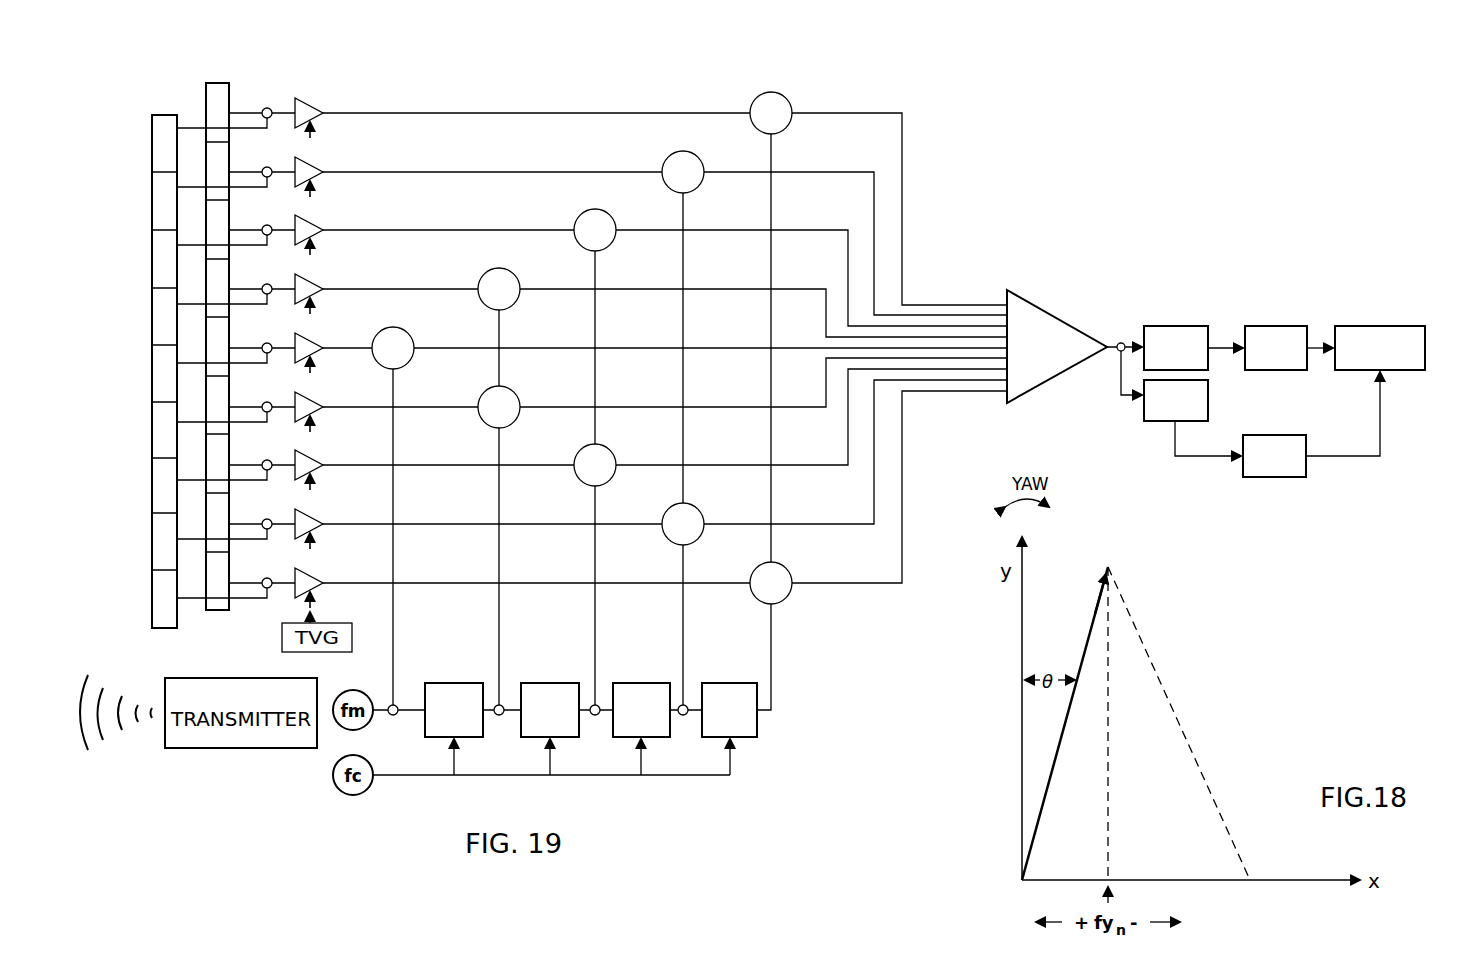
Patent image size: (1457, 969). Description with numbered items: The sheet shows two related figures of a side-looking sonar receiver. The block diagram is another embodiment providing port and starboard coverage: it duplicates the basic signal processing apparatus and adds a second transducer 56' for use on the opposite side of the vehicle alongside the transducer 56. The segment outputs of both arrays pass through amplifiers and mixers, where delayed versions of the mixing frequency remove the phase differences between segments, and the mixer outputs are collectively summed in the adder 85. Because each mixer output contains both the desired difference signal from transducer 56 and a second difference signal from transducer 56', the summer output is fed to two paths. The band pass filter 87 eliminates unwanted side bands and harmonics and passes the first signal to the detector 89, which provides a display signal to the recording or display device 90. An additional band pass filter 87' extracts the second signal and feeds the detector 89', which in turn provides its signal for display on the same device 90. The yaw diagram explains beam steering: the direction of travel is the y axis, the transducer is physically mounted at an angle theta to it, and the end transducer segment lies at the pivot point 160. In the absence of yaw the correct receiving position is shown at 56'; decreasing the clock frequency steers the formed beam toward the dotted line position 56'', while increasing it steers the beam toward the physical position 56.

In FIG. 19, the transducer 56 is at (214, 331).
In FIG. 18, the transducer 56 is at (1065, 723).
In FIG. 19, the second transducer 56' is at (160, 359).
In FIG. 18, the second transducer 56' is at (1128, 723).
In FIG. 18, the dotted line position 56'' is at (1179, 723).
In FIG. 19, the adder 85 is at (1053, 299).
In FIG. 19, the band pass filter 87 is at (1182, 336).
In FIG. 19, the additional band pass filter 87' is at (1197, 400).
In FIG. 19, the detector 89 is at (1282, 336).
In FIG. 19, the detector 89' is at (1287, 446).
In FIG. 19, the recording or display device 90 is at (1397, 326).
In FIG. 18, the pivot point 160 is at (1108, 567).